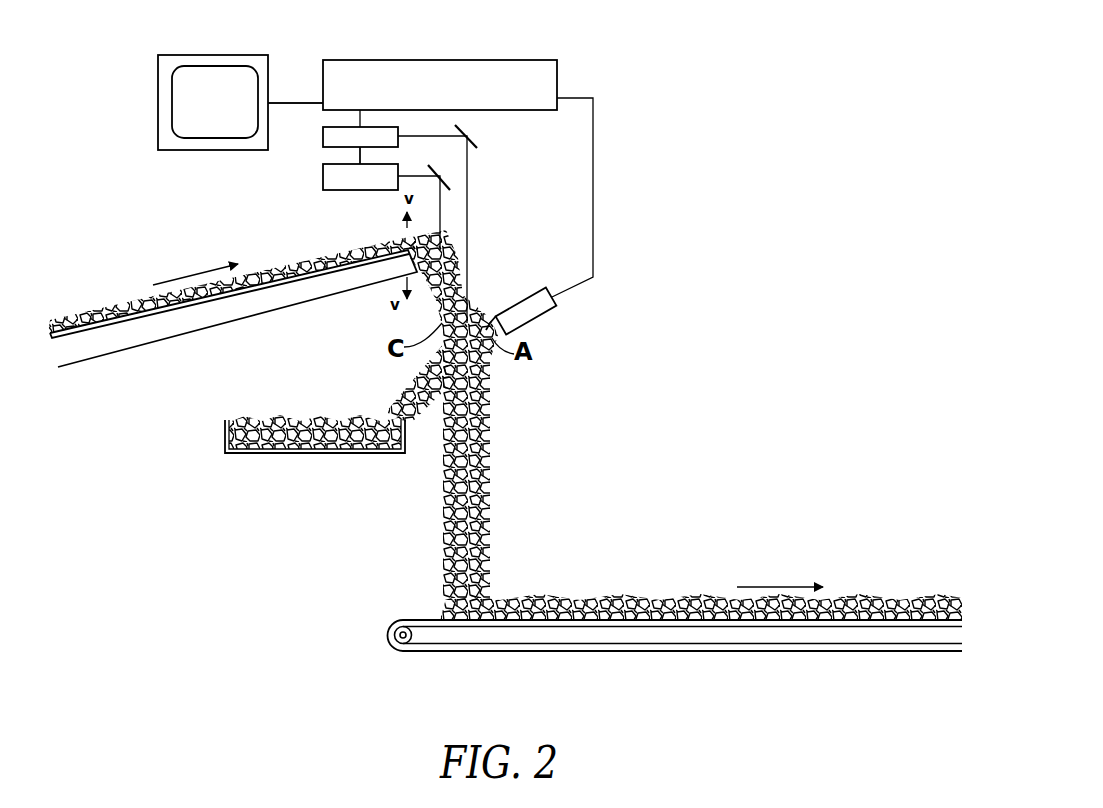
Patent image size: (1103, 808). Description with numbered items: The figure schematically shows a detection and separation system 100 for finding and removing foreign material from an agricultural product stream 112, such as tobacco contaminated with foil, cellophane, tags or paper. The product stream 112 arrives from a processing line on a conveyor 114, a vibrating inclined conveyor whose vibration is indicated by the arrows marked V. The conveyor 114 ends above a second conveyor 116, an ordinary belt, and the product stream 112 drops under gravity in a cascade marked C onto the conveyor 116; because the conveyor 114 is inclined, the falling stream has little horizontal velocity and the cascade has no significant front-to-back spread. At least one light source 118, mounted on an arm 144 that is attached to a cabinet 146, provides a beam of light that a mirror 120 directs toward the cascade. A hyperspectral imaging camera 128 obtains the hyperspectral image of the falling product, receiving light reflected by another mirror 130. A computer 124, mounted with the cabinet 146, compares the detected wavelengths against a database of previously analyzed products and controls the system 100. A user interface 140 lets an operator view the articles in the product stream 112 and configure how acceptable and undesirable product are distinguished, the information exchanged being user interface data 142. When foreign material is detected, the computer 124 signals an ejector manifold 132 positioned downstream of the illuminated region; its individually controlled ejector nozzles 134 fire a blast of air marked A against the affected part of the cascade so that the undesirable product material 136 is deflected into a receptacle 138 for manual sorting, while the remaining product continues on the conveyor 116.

The detection and separation system 100 is at (708, 234).
The agricultural product stream 112 is at (352, 248).
The conveyor 114 is at (184, 337).
The conveyor 116 is at (837, 652).
The light source 118 is at (323, 170).
The mirror 120 is at (446, 157).
The computer 124 is at (437, 60).
The hyperspectral imaging camera 128 is at (323, 128).
The mirror 130 is at (468, 126).
The ejector manifold 132 is at (557, 303).
The ejector nozzles 134 is at (495, 318).
The undesirable product material 136 is at (408, 402).
The receptacle 138 is at (225, 422).
The user interface 140 is at (222, 55).
The user interface data 142 is at (293, 103).
The arm 144 is at (360, 153).
The cabinet 146 is at (558, 70).